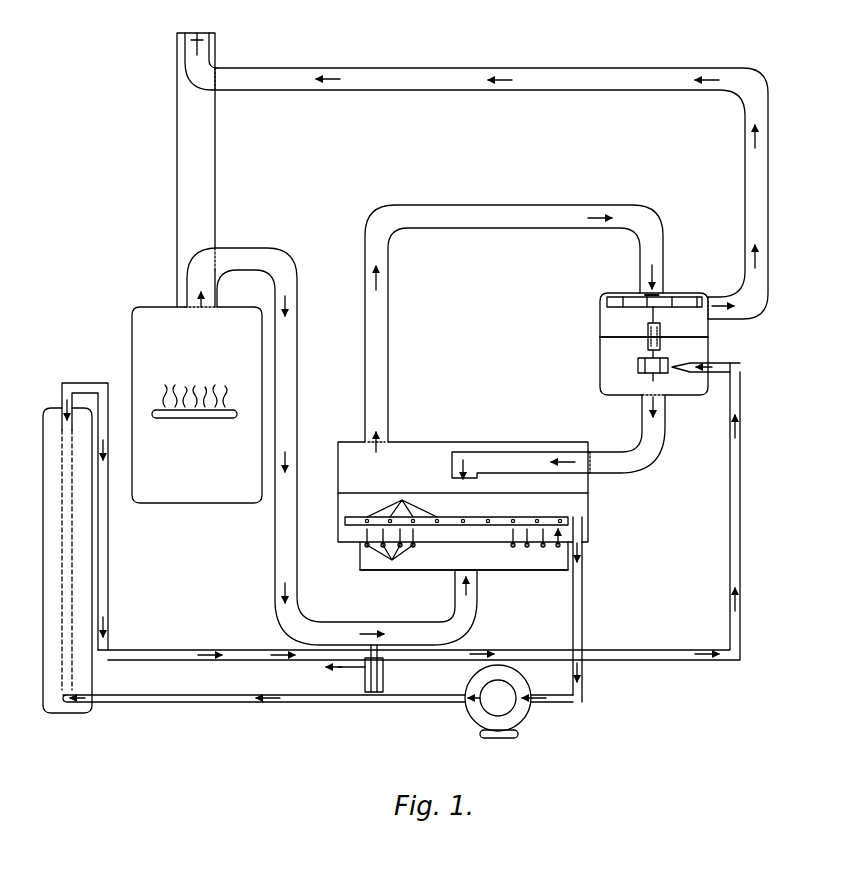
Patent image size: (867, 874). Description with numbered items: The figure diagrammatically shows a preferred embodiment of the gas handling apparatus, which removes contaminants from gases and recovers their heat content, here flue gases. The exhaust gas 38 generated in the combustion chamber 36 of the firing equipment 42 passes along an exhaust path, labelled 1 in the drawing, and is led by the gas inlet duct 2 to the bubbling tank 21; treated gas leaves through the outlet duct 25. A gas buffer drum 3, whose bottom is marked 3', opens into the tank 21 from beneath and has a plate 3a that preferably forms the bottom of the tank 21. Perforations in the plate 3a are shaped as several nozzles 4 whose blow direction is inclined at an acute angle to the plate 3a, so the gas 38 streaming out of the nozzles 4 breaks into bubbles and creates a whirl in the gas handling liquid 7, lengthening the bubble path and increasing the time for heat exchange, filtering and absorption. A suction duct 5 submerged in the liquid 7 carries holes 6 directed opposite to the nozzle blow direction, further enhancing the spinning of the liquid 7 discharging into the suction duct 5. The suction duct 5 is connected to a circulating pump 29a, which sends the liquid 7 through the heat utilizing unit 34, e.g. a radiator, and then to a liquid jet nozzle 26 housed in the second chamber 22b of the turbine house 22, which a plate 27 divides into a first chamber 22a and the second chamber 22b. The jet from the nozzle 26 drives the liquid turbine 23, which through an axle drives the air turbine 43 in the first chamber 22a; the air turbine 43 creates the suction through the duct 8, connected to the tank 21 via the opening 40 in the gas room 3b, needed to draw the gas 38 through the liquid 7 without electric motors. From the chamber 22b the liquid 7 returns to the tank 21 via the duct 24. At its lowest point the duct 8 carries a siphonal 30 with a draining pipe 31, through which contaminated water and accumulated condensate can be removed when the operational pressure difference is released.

The exhaust pipe 1 is at (177, 162).
The gas inlet duct 2 is at (253, 248).
The gas buffer drum 3 is at (464, 568).
The water bath bottom 3' is at (464, 576).
The plate 3a is at (458, 540).
The gas room 3b is at (410, 465).
The nozzle 4 is at (390, 557).
The suction duct 5 is at (359, 517).
The holes 6 is at (402, 502).
The gas handling liquid 7 is at (447, 493).
The duct 8 is at (610, 205).
The bubbling tank 21 is at (338, 468).
The turbine house 22 is at (684, 296).
The first chamber 22a is at (600, 319).
The second chamber 22b is at (600, 371).
The liquid turbine 23 is at (638, 363).
The duct 24 is at (655, 446).
The outlet duct 25 is at (248, 68).
The liquid jet nozzle 26 is at (684, 364).
The plate 27 is at (708, 337).
The circulating pump 29a is at (526, 716).
The siphonal 30 is at (383, 676).
The draining pipe 31 is at (331, 670).
The heat utilizing unit 34 is at (52, 408).
The combustion chamber 36 is at (237, 398).
The gas 38 is at (201, 173).
The opening 40 is at (377, 449).
The firing equipment 42 is at (152, 307).
The air turbine 43 is at (606, 296).